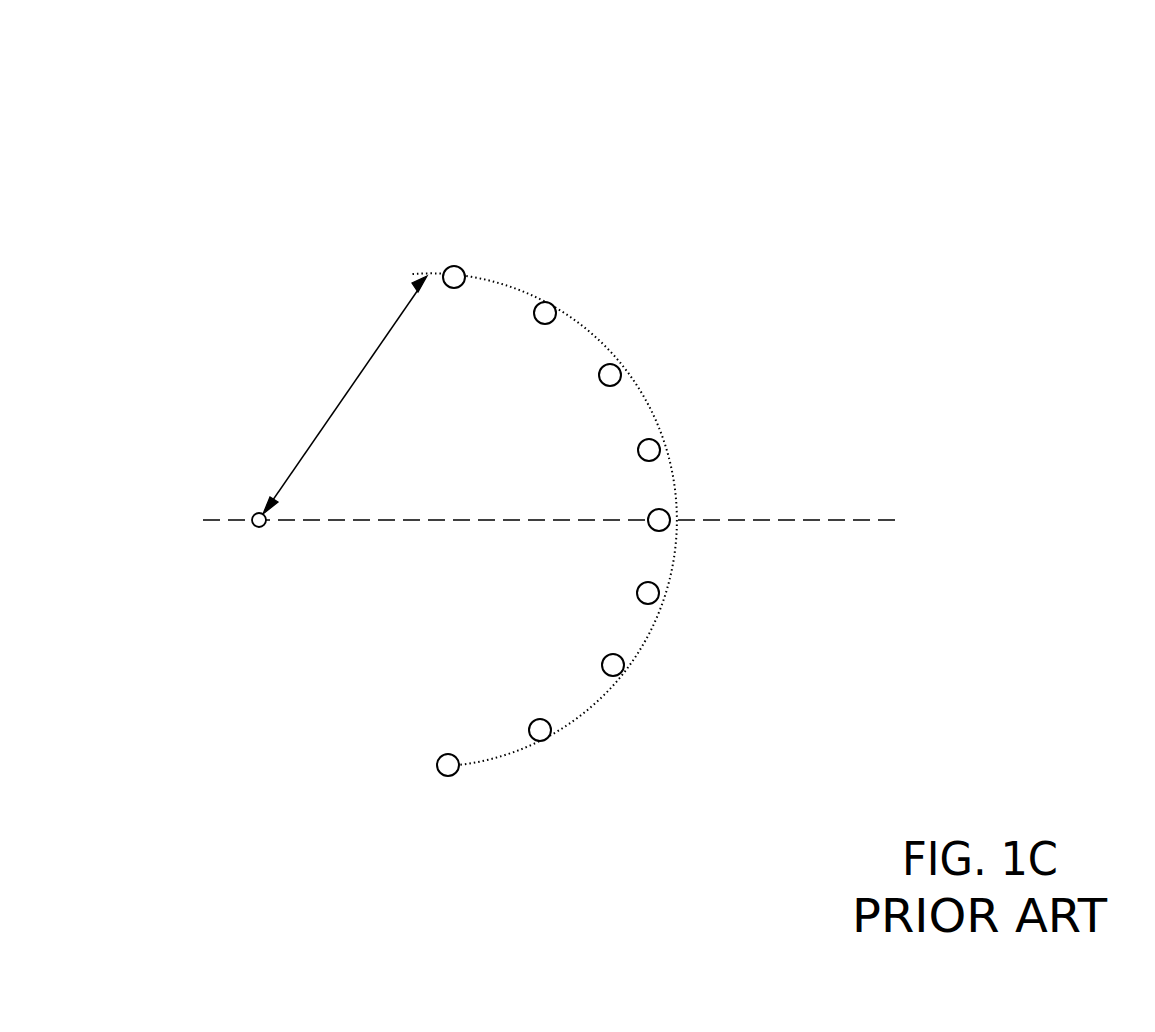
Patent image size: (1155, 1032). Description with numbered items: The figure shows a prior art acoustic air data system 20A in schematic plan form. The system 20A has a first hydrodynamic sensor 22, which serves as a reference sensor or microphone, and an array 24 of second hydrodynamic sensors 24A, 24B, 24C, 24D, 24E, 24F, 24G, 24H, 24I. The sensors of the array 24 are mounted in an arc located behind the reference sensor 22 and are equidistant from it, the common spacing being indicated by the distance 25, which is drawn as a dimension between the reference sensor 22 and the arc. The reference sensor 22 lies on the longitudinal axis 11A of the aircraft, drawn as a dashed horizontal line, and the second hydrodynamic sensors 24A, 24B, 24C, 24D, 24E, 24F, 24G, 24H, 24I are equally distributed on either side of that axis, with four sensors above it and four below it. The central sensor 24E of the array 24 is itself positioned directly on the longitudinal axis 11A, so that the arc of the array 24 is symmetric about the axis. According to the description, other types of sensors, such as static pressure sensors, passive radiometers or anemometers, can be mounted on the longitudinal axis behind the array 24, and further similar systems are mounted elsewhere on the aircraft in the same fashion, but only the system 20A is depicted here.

The longitudinal axis 11A is at (824, 520).
The acoustic air data system 20A is at (924, 214).
The first hydrodynamic sensor 22 is at (262, 527).
The array 24 is at (603, 183).
The second hydrodynamic sensor 24A is at (462, 269).
The second hydrodynamic sensor 24B is at (553, 306).
The second hydrodynamic sensor 24C is at (618, 367).
The second hydrodynamic sensor 24D is at (657, 442).
The second hydrodynamic sensor 24E is at (667, 512).
The second hydrodynamic sensor 24F is at (658, 598).
The second hydrodynamic sensor 24G is at (622, 672).
The second hydrodynamic sensor 24H is at (547, 739).
The second hydrodynamic sensor 24I is at (454, 775).
The distance 25 is at (360, 372).